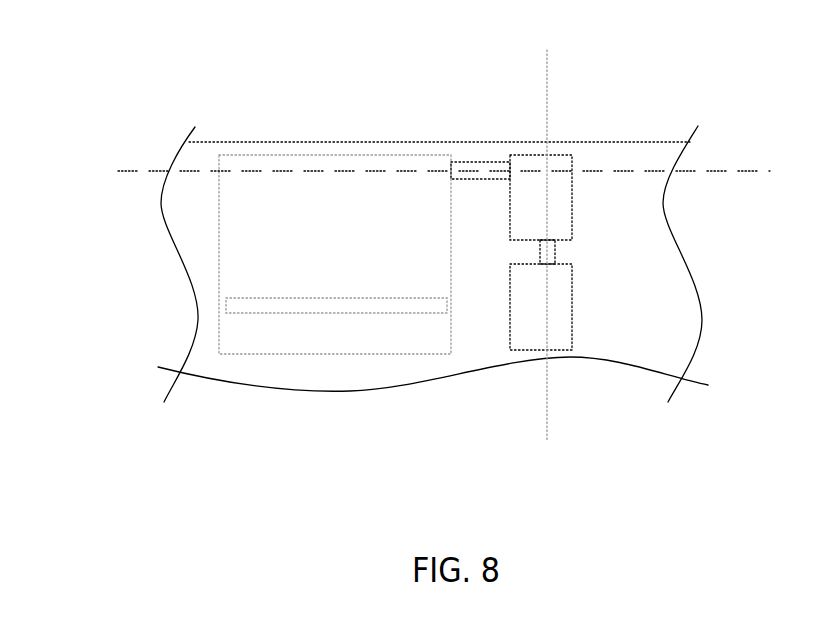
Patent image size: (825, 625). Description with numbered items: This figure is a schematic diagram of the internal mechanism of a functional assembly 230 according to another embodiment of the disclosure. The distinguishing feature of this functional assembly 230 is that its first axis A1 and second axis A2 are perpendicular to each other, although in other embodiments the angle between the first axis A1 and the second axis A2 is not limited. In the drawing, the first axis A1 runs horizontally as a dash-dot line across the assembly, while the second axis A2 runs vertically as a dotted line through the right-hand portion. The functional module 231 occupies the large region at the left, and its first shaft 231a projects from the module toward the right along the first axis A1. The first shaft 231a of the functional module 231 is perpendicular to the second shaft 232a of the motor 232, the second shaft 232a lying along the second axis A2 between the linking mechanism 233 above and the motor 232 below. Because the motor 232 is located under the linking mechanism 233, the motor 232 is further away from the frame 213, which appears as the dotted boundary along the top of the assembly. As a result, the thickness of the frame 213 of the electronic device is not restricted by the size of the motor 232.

The functional assembly 230 is at (76, 30).
The frame 213 is at (353, 141).
The functional module 231 is at (393, 303).
The first shaft 231a is at (492, 168).
The motor 232 is at (523, 337).
The second shaft 232a is at (555, 253).
The linking mechanism 233 is at (563, 160).
The first axis A1 is at (757, 170).
The second axis A2 is at (549, 393).